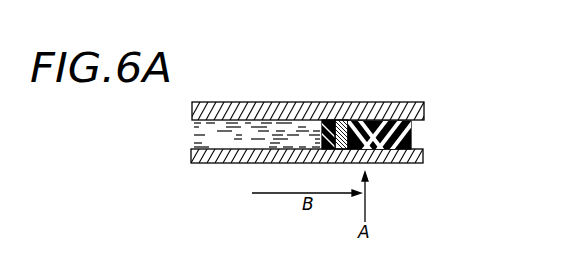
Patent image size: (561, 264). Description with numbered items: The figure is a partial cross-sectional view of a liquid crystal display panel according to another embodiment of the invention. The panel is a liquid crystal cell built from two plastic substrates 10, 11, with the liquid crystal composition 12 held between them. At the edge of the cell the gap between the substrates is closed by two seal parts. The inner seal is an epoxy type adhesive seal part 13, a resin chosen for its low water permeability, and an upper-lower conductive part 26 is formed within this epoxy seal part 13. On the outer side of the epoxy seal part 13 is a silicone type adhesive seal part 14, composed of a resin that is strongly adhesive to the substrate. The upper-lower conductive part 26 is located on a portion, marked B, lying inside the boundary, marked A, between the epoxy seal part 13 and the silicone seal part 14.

The plastic substrate 10 is at (215, 163).
The plastic substrate 11 is at (260, 102).
The liquid crystal composition 12 is at (212, 136).
The epoxy type adhesive seal part 13 is at (332, 121).
The upper-lower conductive part 26 is at (342, 121).
The silicone type adhesive seal part 14 is at (410, 141).